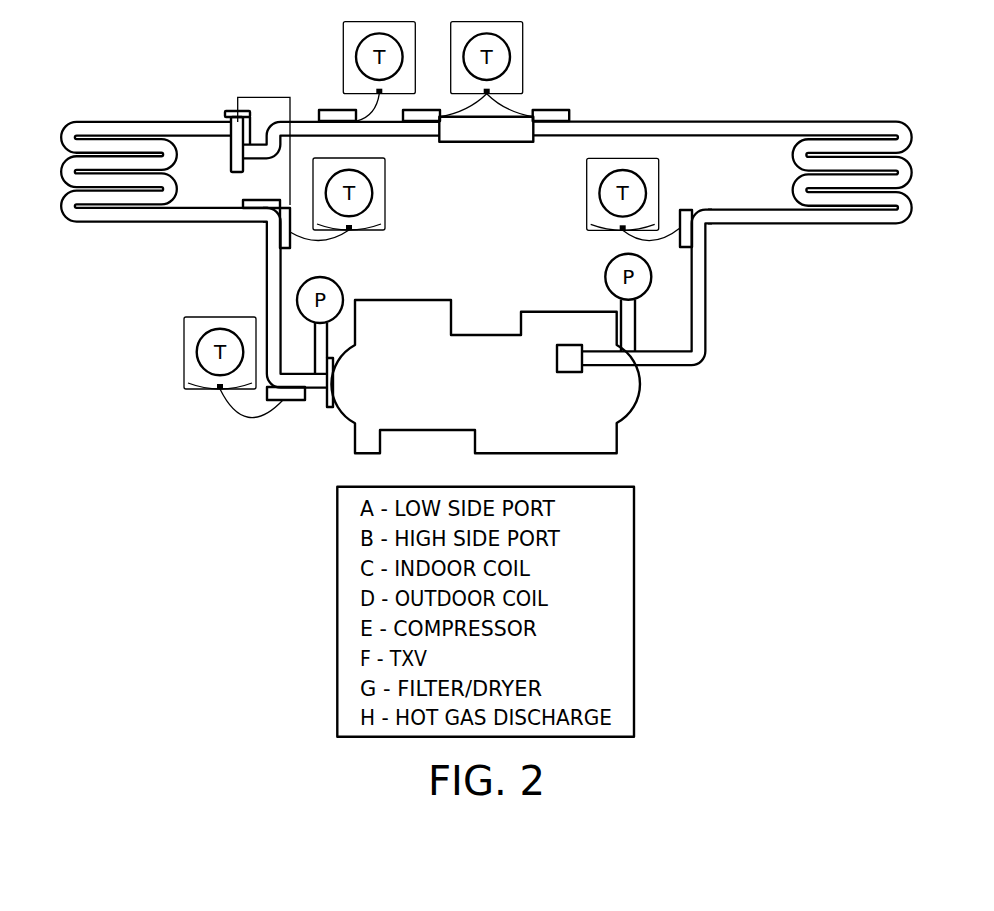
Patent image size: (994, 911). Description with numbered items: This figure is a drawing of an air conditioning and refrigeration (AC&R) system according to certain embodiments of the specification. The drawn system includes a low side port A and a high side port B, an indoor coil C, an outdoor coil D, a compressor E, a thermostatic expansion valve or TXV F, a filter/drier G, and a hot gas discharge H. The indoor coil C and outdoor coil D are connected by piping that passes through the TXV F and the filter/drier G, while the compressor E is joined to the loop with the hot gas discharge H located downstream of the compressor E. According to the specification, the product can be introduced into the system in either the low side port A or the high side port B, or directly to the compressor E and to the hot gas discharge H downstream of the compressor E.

The low side port A is at (265, 293).
The high side port B is at (715, 122).
The indoor coil C is at (168, 154).
The outdoor coil D is at (719, 155).
The compressor E is at (485, 376).
The TXV F is at (332, 136).
The filter/drier G is at (486, 143).
The hot gas discharge H is at (705, 293).